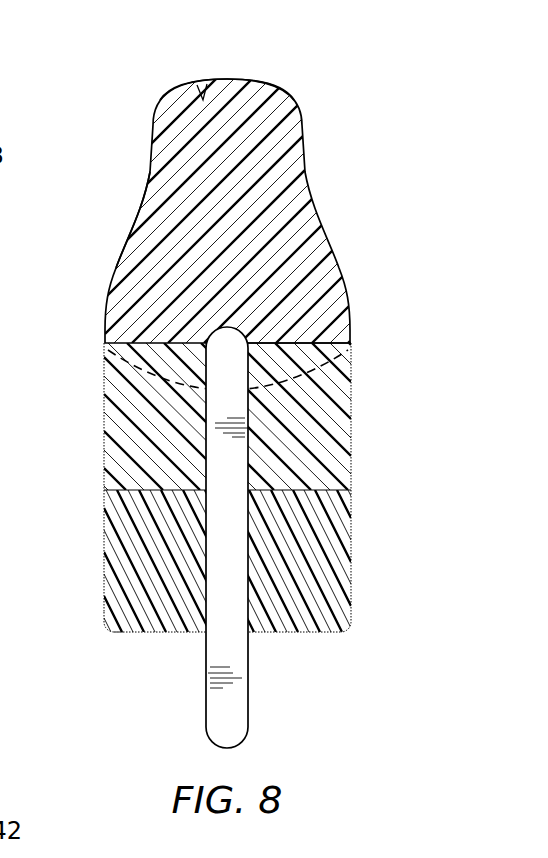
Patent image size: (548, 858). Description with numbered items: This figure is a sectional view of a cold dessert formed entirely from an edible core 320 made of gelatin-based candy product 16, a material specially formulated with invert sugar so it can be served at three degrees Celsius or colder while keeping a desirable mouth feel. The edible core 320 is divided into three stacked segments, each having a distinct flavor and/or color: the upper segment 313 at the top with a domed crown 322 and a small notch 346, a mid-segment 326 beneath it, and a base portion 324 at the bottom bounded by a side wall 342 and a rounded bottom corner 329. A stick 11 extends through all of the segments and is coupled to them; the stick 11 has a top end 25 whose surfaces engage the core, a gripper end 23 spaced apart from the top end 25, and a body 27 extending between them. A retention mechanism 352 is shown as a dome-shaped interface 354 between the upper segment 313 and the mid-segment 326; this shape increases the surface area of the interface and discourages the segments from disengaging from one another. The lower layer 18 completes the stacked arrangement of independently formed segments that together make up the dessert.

The stick 11 is at (269, 537).
The gelatin-based candy product 16 is at (287, 268).
The second layer 18 is at (97, 552).
The gripper end 23 is at (207, 735).
The top end 25 is at (243, 325).
The body 27 is at (248, 513).
The upper segment 313 is at (128, 218).
The edible core 320 is at (342, 222).
The domed top 322 is at (295, 100).
The base portion 324 is at (346, 629).
The intermediate portion 326 is at (351, 452).
The bottom corner 329 is at (170, 614).
The side wall of base 342 is at (351, 565).
The notch 346 is at (204, 98).
The retention mechanism 352 is at (153, 385).
The interface 354 is at (291, 381).